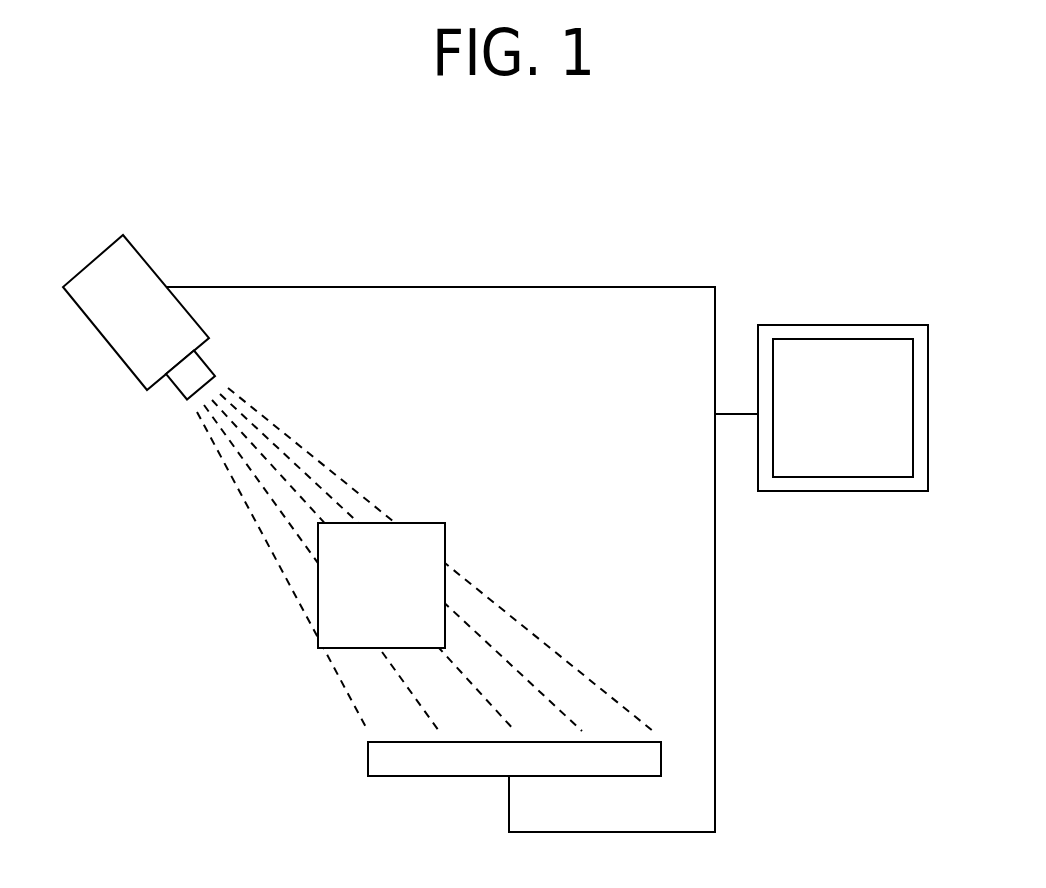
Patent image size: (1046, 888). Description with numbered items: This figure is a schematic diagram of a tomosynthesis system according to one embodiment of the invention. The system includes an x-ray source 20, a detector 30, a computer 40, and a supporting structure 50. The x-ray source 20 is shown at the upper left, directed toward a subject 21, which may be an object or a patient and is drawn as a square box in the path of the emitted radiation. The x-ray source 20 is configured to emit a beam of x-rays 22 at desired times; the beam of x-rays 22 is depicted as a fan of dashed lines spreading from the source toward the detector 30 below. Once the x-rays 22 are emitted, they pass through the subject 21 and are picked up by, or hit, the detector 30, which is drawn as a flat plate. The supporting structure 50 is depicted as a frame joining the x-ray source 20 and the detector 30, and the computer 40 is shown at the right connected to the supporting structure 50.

The x-ray source 20 is at (149, 266).
The subject 21 is at (445, 532).
The beam of x-rays 22 is at (311, 458).
The detector 30 is at (368, 764).
The computer 40 is at (824, 350).
The supporting structure 50 is at (440, 286).